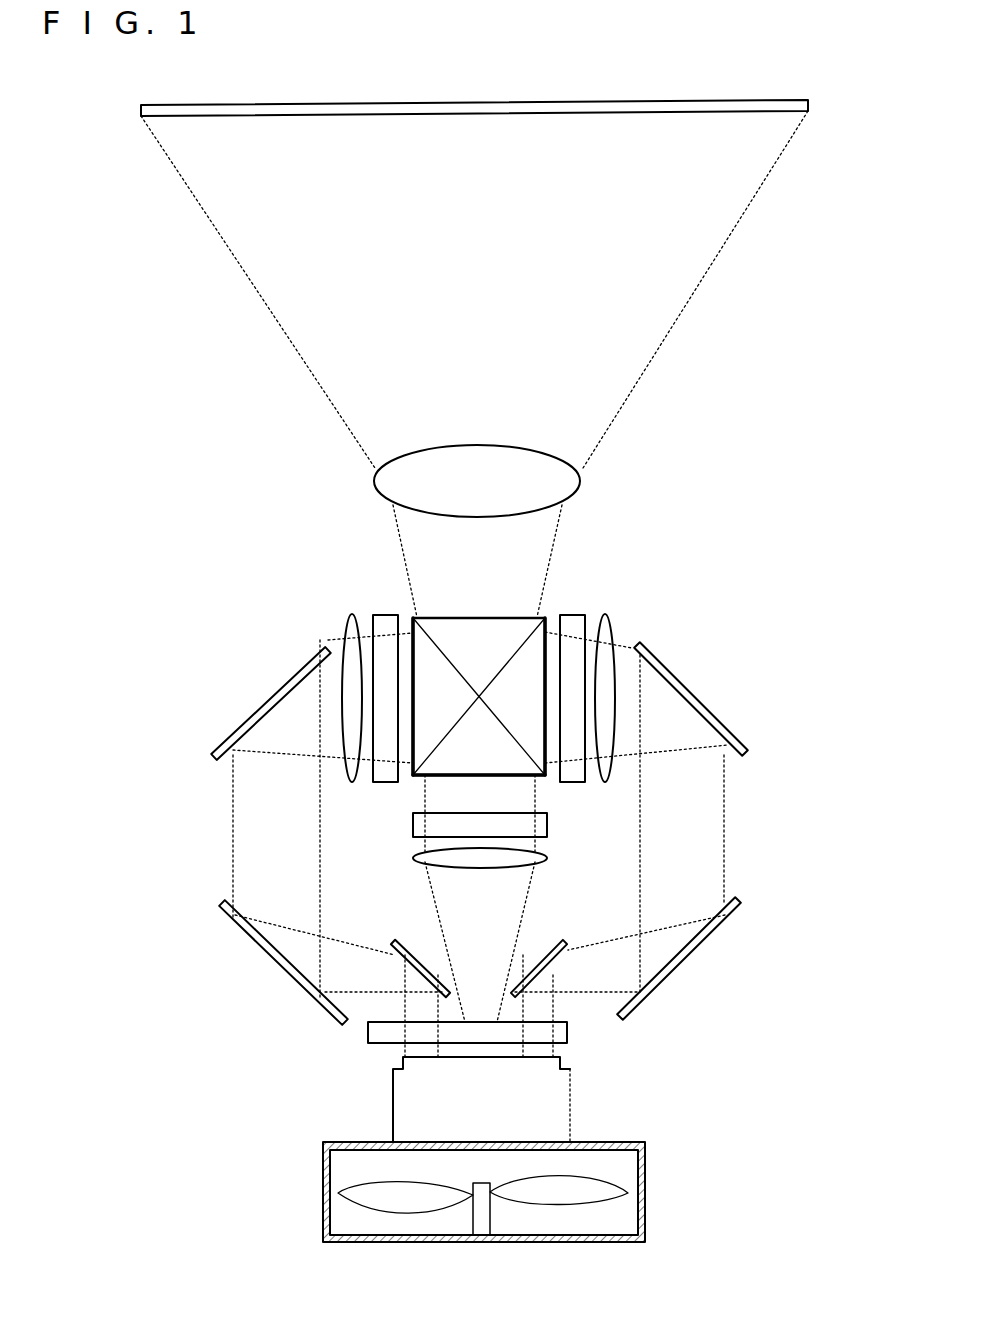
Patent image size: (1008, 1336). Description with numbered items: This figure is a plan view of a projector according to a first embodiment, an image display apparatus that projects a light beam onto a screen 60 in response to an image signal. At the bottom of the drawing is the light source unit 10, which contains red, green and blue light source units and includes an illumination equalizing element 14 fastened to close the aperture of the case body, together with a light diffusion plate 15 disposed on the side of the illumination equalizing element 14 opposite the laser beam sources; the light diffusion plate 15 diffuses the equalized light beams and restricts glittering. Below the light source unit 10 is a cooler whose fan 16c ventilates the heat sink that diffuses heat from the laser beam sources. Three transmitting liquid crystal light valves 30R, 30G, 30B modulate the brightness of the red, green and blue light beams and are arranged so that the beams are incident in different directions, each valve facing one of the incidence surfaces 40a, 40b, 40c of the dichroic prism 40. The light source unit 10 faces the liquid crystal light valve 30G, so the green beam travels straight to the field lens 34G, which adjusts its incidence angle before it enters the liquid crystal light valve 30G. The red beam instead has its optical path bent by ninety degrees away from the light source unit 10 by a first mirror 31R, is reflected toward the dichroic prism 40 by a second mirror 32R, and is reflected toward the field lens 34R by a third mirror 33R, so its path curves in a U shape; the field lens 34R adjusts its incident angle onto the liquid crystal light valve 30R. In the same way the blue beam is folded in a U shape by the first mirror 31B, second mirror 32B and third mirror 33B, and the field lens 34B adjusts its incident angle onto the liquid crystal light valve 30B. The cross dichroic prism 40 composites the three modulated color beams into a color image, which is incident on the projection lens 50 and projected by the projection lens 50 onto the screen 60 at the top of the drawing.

The light source unit 10 is at (582, 1112).
The illumination equalizing element 14 is at (572, 1062).
The light diffusion plate 15 is at (567, 1032).
The fan 16c is at (645, 1185).
The liquid crystal light valve 30R is at (383, 613).
The liquid crystal light valve 30G is at (547, 828).
The liquid crystal light valve 30B is at (572, 613).
The first mirror 31R is at (410, 940).
The first mirror 31B is at (547, 940).
The second mirror 32R is at (280, 968).
The second mirror 32B is at (680, 965).
The third mirror 33R is at (268, 700).
The third mirror 33B is at (690, 693).
The field lens 34R is at (345, 627).
The field lens 34G is at (547, 860).
The field lens 34B is at (612, 620).
The dichroic prism 40 is at (410, 782).
The incidence surface 40a is at (410, 617).
The incidence surface 40b is at (520, 778).
The incidence surface 40c is at (549, 615).
The projection lens 50 is at (567, 487).
The screen 60 is at (812, 103).